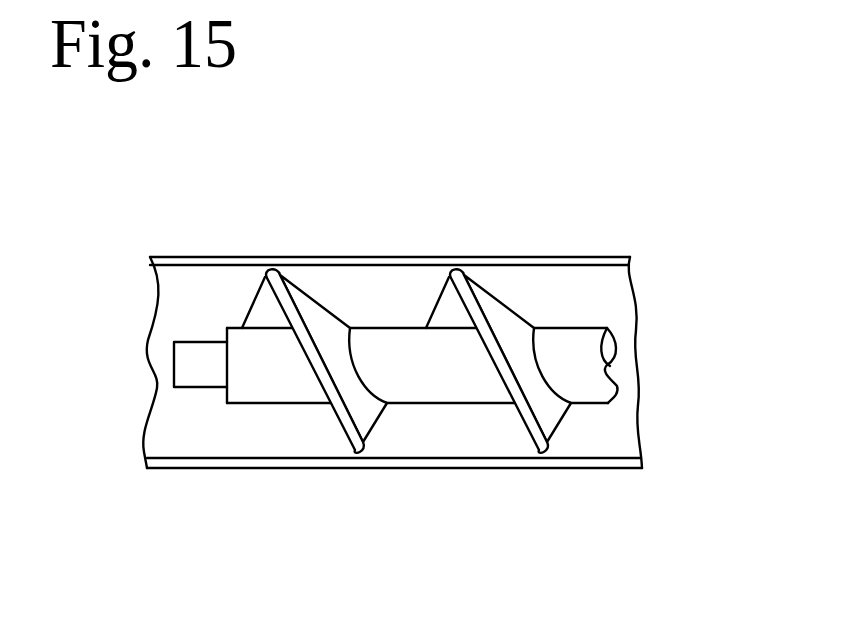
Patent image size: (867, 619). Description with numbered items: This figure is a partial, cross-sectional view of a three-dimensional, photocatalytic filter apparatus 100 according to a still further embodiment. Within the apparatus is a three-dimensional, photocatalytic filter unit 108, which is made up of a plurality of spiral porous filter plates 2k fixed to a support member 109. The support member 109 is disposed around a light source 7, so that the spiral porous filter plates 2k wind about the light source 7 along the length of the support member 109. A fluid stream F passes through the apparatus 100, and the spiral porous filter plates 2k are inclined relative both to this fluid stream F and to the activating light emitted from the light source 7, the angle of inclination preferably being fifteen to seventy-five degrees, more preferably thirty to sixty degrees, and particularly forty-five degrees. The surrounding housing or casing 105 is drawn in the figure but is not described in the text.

The three-dimensional, photocatalytic filter apparatus 100 is at (420, 223).
The conveying casing 105 is at (348, 262).
The fluid stream F is at (580, 297).
The light source 7 is at (203, 372).
The support member 109 is at (452, 388).
The spiral porous filter plates 2k is at (363, 415).
The three-dimensional, photocatalytic filter unit 108 is at (578, 427).